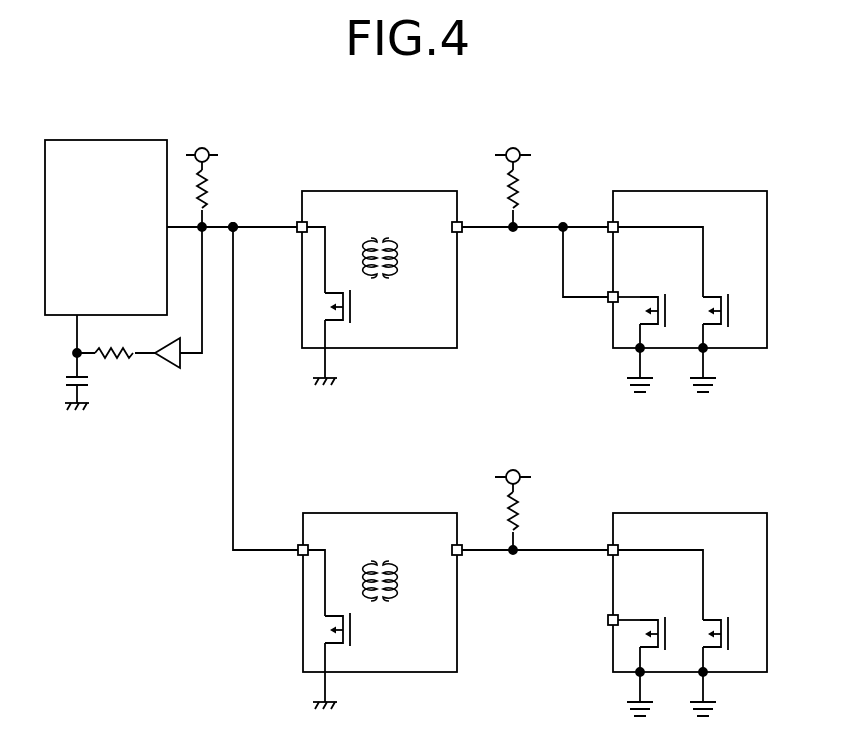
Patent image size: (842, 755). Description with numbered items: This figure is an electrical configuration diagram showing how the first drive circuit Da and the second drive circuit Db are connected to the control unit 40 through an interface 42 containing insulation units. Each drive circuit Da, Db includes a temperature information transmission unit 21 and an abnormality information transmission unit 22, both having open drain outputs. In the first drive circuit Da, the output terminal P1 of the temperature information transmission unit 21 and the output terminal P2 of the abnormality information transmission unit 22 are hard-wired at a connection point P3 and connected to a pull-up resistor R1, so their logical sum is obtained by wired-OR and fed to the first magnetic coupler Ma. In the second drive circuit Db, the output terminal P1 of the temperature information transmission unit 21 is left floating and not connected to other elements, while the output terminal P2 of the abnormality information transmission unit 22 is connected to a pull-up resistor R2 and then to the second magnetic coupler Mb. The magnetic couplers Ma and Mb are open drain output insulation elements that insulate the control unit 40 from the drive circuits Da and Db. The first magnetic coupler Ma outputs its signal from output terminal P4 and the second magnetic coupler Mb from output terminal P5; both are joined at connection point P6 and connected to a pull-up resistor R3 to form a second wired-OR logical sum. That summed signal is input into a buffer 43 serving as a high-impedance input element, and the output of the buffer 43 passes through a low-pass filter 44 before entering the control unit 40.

The control unit 40 is at (146, 140).
The interface 42 is at (432, 170).
The buffer 43 is at (175, 369).
The low-pass filter 44 is at (124, 389).
The temperature information transmission unit 21 is at (648, 290).
The abnormality information transmission unit 22 is at (717, 290).
The pull-up resistor R1 is at (522, 188).
The pull-up resistor R2 is at (522, 511).
The pull-up resistor R3 is at (212, 188).
The output terminal P1 is at (606, 303).
The output terminal P2 is at (609, 223).
The connection point P3 is at (561, 231).
The output terminal P4 is at (298, 222).
The output terminal P5 is at (298, 545).
The connection point P6 is at (235, 231).
The first magnetic coupler Ma is at (421, 349).
The second magnetic coupler Mb is at (421, 673).
The first drive circuit Da is at (749, 349).
The second drive circuit Db is at (749, 673).